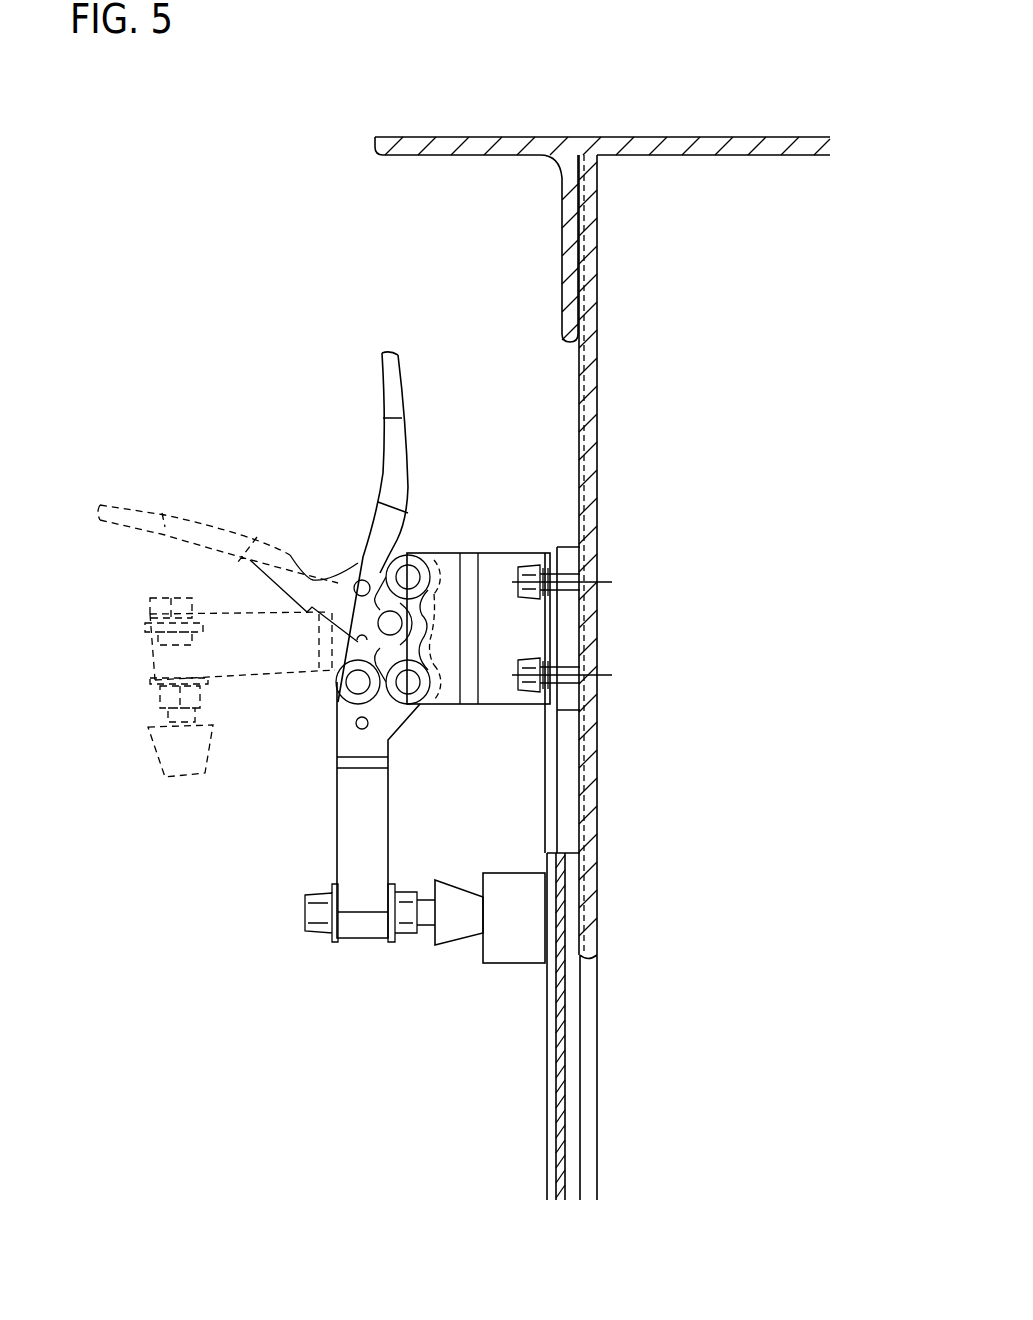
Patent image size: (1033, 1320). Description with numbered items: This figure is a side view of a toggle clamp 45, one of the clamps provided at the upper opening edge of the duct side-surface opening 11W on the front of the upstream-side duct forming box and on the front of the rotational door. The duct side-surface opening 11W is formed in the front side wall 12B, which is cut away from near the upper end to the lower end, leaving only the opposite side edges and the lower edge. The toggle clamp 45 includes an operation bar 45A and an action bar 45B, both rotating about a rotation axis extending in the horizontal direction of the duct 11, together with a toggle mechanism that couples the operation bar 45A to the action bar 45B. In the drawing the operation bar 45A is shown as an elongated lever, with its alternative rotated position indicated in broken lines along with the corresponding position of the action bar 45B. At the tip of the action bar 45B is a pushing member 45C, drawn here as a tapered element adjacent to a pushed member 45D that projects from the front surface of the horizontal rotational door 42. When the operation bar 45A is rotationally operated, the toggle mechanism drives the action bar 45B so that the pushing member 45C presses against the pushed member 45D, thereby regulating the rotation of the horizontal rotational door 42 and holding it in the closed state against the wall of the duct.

The duct 11 is at (557, 276).
The duct side-surface opening 11W is at (591, 955).
The front side wall 12B is at (579, 400).
The horizontal rotational door 42 is at (547, 1065).
The toggle clamp 45 is at (393, 689).
The operation bar 45A is at (403, 472).
The action bar 45B is at (345, 828).
The pushing member 45C is at (476, 930).
The pushed member 45D is at (528, 900).